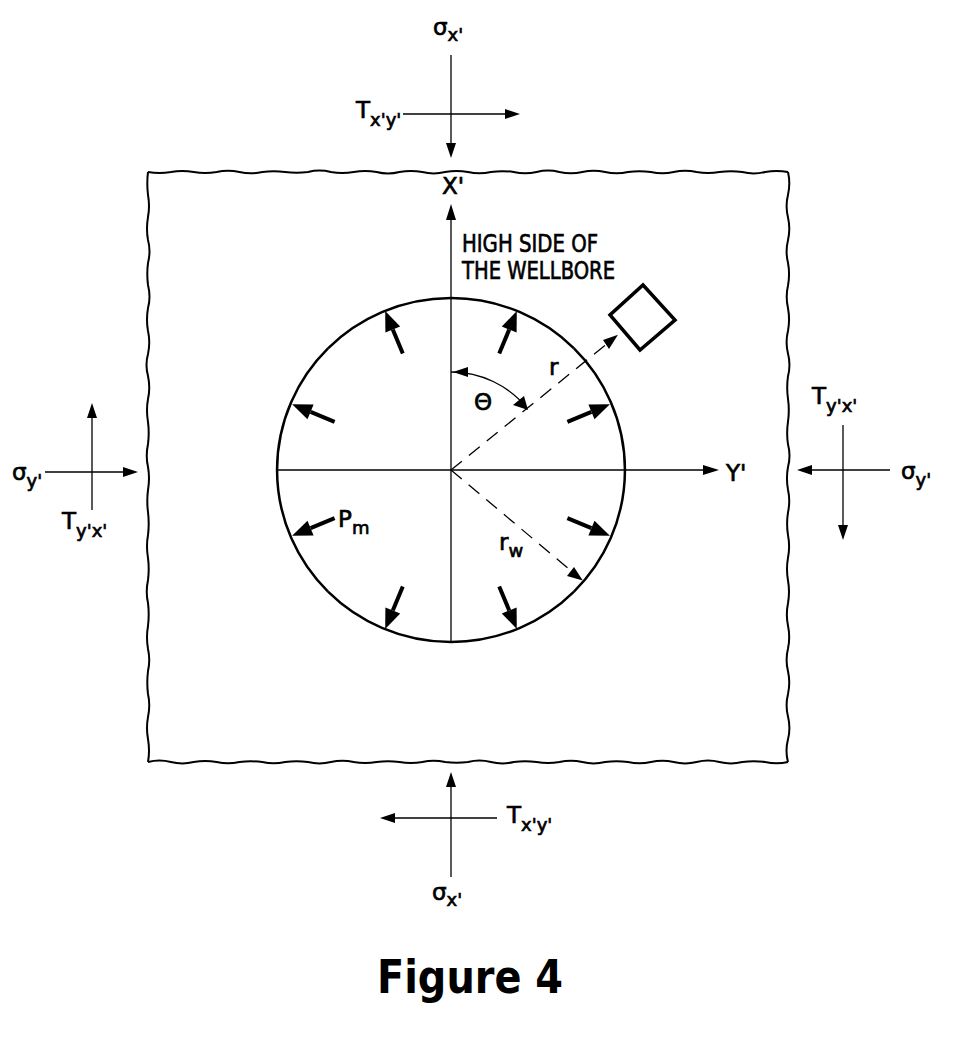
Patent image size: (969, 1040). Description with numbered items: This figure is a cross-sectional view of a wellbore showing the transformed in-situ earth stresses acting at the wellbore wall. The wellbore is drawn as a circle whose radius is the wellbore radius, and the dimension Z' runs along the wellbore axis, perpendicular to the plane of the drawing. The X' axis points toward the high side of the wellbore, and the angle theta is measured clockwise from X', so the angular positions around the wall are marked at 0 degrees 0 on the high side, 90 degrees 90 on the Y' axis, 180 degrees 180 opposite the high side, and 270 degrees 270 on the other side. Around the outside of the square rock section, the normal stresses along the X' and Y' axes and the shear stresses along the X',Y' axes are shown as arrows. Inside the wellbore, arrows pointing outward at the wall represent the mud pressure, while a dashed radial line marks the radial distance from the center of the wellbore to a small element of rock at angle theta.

The 0 degree position (high side of the wellbore) 0 is at (451, 308).
The 90 degree position of the wellbore wall 90 is at (624, 469).
The 180 degree position (low side of the wellbore) 180 is at (451, 634).
The 270 degree position of the wellbore wall 270 is at (275, 469).